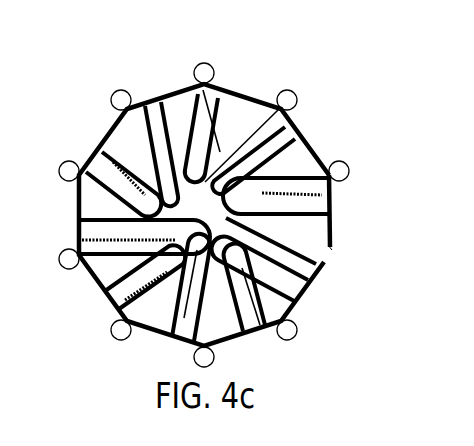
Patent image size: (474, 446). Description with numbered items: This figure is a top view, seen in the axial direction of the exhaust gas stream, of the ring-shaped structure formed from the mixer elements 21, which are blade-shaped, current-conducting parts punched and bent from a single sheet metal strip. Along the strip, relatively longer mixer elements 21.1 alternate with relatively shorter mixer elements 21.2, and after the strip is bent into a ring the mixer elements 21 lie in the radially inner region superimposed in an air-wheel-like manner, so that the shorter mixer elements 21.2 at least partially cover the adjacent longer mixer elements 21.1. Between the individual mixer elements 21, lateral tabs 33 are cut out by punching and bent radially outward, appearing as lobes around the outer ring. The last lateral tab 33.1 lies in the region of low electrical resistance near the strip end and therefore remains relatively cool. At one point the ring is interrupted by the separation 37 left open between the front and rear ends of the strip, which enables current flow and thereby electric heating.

The mixer elements 21 is at (220, 105).
The relatively longer mixer elements 21.1 is at (152, 100).
The relatively shorter mixer elements 21.2 is at (108, 165).
The tabs 33 is at (57, 169).
The last lateral tab 33.1 is at (349, 171).
The separation 37 is at (338, 258).